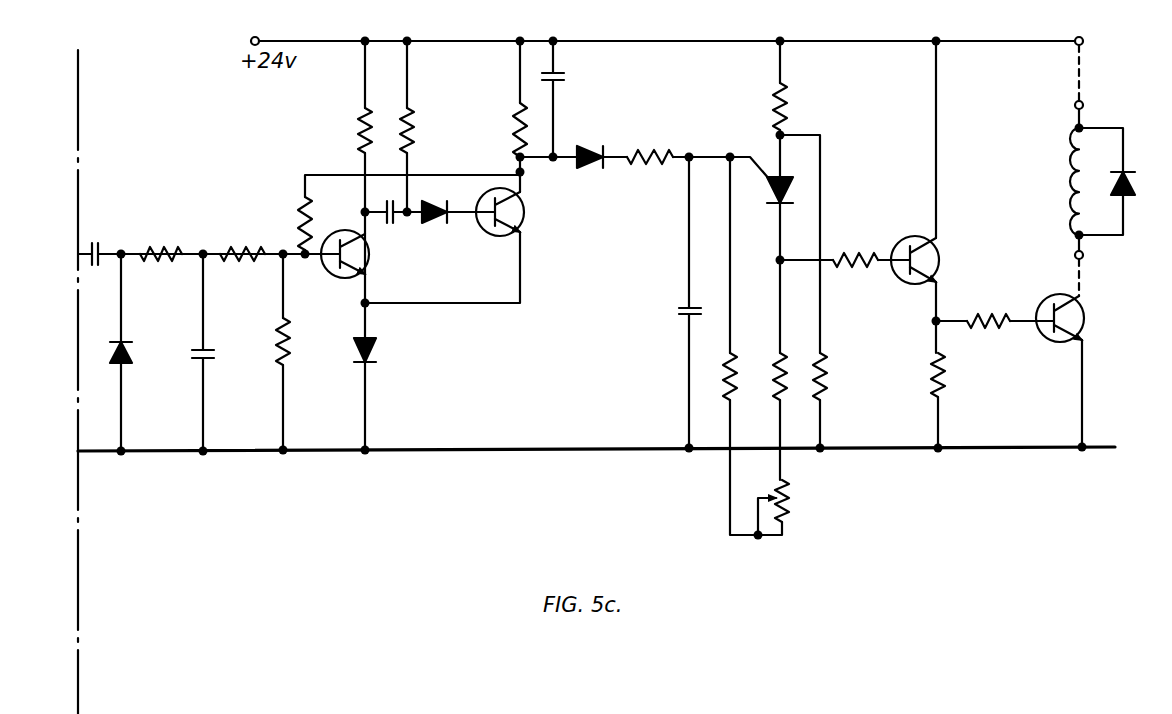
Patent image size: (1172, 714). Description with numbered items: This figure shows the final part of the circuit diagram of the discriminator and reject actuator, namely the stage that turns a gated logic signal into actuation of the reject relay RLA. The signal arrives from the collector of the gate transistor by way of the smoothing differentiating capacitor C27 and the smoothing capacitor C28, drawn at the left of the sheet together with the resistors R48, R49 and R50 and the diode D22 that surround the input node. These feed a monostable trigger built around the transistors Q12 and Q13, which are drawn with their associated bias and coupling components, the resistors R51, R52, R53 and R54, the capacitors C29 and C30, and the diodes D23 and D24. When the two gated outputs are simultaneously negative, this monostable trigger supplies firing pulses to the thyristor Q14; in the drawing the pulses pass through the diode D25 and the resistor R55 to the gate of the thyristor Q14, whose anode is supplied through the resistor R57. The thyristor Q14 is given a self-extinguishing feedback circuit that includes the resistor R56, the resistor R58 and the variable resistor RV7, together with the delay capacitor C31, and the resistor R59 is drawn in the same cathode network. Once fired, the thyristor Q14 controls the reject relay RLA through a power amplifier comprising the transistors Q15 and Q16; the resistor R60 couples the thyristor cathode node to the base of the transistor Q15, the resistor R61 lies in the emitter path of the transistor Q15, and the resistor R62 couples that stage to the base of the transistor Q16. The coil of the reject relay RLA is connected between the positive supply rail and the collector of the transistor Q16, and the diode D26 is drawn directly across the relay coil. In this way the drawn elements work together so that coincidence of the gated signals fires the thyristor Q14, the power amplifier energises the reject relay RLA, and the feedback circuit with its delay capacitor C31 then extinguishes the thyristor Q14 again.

The smoothing differentiating capacitor C27 is at (100, 243).
The resistor R48 is at (146, 262).
The resistor R49 is at (235, 262).
The diode D22 is at (129, 358).
The smoothing capacitor C28 is at (209, 360).
The resistor R50 is at (290, 360).
The resistor R51 is at (300, 218).
The resistor R52 is at (360, 138).
The resistor R53 is at (413, 141).
The resistor R54 is at (515, 132).
The capacitor C29 is at (384, 210).
The capacitor C30 is at (562, 75).
The transistor Q12 is at (371, 264).
The diode D23 is at (378, 352).
The diode D24 is at (432, 221).
The transistor Q13 is at (523, 214).
The diode D25 is at (586, 168).
The resistor R55 is at (645, 166).
The delay capacitor C31 is at (683, 312).
The resistor R56 is at (736, 362).
The resistor R57 is at (786, 110).
The thyristor Q14 is at (774, 205).
The resistor R58 is at (777, 384).
The resistor R59 is at (826, 375).
The variable resistor RV7 is at (790, 489).
The resistor R60 is at (851, 255).
The transistor Q15 is at (937, 252).
The resistor R61 is at (947, 373).
The resistor R62 is at (983, 318).
The transistor Q16 is at (1085, 314).
The reject relay RLA is at (1068, 186).
The diode D26 is at (1119, 197).